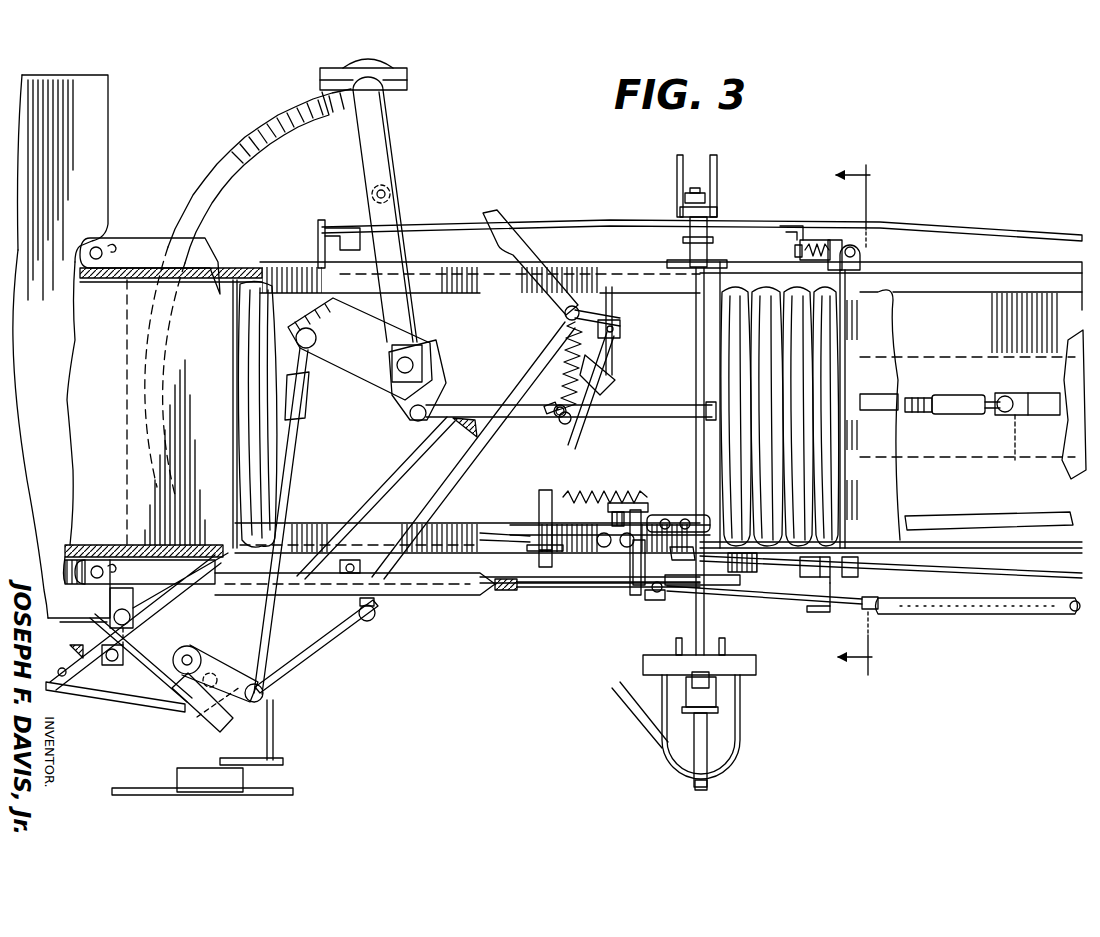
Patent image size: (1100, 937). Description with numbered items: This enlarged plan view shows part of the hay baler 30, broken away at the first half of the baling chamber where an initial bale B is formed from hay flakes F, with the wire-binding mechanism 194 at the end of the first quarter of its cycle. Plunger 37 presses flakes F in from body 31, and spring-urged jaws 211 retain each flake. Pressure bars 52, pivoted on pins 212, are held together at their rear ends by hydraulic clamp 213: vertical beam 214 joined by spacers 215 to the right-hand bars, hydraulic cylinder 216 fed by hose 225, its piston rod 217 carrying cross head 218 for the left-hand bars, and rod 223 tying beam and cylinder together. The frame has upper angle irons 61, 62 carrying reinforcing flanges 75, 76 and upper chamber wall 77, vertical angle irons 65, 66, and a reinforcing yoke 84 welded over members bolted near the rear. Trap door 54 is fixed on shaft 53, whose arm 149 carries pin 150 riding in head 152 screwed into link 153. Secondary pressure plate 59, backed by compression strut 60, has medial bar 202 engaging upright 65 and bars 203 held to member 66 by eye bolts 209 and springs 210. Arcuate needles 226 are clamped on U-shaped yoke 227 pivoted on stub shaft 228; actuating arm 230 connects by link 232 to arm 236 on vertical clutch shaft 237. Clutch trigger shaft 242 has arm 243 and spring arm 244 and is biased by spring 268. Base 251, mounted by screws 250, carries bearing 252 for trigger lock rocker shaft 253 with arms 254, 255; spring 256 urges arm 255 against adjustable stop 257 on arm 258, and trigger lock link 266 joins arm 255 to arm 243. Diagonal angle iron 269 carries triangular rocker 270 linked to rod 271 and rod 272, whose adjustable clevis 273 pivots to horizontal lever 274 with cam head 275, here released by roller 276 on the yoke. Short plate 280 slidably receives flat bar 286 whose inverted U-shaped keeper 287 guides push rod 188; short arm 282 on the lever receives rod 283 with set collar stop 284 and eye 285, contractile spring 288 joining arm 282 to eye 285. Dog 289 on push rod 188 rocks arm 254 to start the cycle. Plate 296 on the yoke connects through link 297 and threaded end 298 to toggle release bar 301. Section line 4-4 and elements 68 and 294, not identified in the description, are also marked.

The cotton picker unit 30 is at (977, 170).
The support post 31 is at (84, 142).
The post lower portion 37 is at (82, 366).
The top rail 52 is at (612, 222).
The bracket 53 is at (856, 580).
The housing 54 is at (885, 362).
The partition wall 59 is at (843, 330).
The bar 60 is at (888, 412).
The frame bottom 61 is at (328, 522).
The rail 62 is at (983, 272).
The bracket 65 is at (812, 583).
The spring 66 is at (812, 240).
The lower rail 68 is at (1022, 576).
The frame rail 75 is at (960, 552).
The frame rail 76 is at (898, 266).
The hatched region 77 is at (847, 343).
The plate 84 is at (1074, 455).
The rod 149 is at (858, 600).
The link 150 is at (820, 614).
The fitting 152 is at (845, 603).
The cylinder 153 is at (1005, 612).
The tube 188 is at (1025, 515).
The compacting mechanism 194 is at (432, 160).
The lower panel 202 is at (855, 505).
The cotton column 203 is at (855, 328).
The bracket 209 is at (836, 245).
The pipe 210 is at (806, 230).
The hinge bracket 211 is at (208, 244).
The bracket 212 is at (352, 235).
The cup 213 is at (742, 722).
The bracket posts 214 is at (716, 160).
The plate 215 is at (716, 210).
The cup bottom 216 is at (665, 752).
The rod 217 is at (694, 612).
The block 218 is at (725, 580).
The vertical rod 223 is at (706, 625).
The pipe 225 is at (636, 720).
The curved arm 226 is at (238, 143).
The pivot arm 227 is at (392, 134).
The bracket plate 228 is at (412, 355).
The plate pivot 230 is at (333, 345).
The rod 232 is at (293, 455).
The post 236 is at (274, 716).
The pivot 237 is at (192, 650).
The block 242 is at (131, 612).
The bracket 243 is at (106, 614).
The bar 244 is at (90, 660).
The rollers 250 is at (610, 548).
The bar 251 is at (600, 540).
The bar 252 is at (630, 562).
The post 253 is at (642, 510).
The block 254 is at (614, 505).
The link 255 is at (640, 600).
The spring 256 is at (580, 497).
The lever 257 is at (660, 594).
The bar 258 is at (652, 550).
The bar 266 is at (443, 597).
The pin 268 is at (58, 670).
The strut 269 is at (396, 497).
The link 270 is at (208, 720).
The bar 271 is at (120, 706).
The rod 272 is at (305, 650).
The lever 273 is at (570, 388).
The arm 274 is at (555, 312).
The blade 275 is at (497, 215).
The pin 276 is at (392, 196).
The threaded rod 280 is at (500, 590).
The lever 282 is at (622, 322).
The post 283 is at (614, 305).
The box 284 is at (622, 336).
The pin 285 is at (572, 420).
The post 286 is at (540, 500).
The crosspiece 287 is at (540, 545).
The spring 288 is at (572, 365).
The lever 289 is at (663, 518).
The roller 294 is at (370, 624).
The clevis 296 is at (392, 400).
The rod 297 is at (490, 417).
The fitting 298 is at (930, 400).
The block 301 is at (1043, 416).
The section line 4- 4 is at (866, 421).
The cotton bale B is at (245, 352).
The cotton top F is at (790, 290).